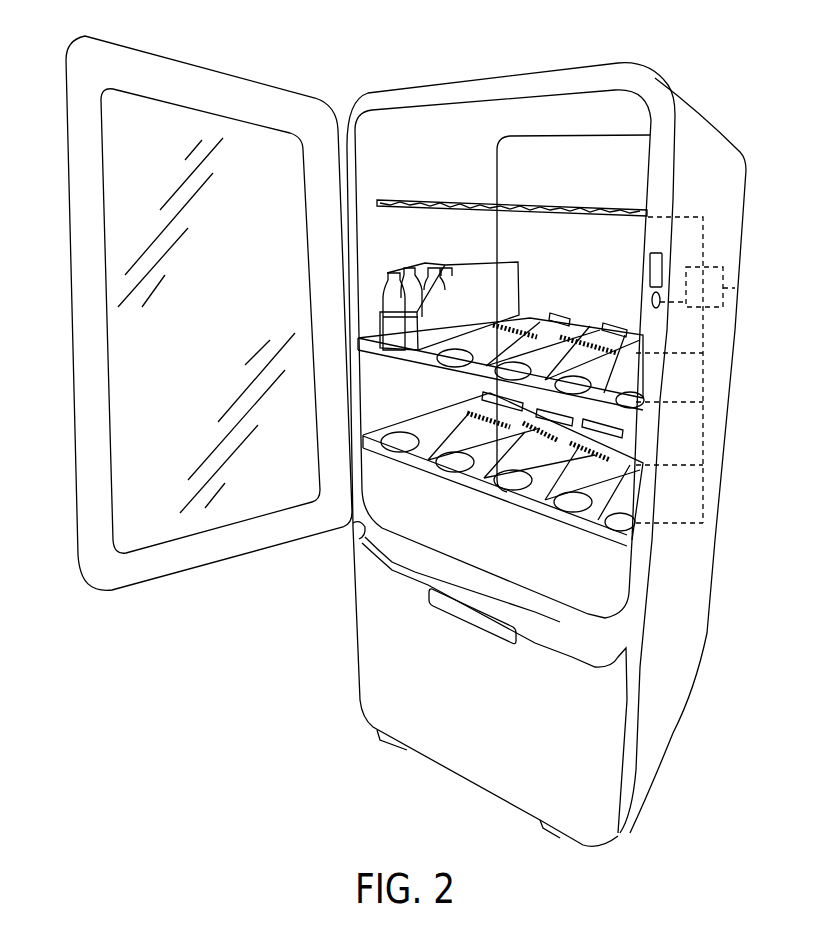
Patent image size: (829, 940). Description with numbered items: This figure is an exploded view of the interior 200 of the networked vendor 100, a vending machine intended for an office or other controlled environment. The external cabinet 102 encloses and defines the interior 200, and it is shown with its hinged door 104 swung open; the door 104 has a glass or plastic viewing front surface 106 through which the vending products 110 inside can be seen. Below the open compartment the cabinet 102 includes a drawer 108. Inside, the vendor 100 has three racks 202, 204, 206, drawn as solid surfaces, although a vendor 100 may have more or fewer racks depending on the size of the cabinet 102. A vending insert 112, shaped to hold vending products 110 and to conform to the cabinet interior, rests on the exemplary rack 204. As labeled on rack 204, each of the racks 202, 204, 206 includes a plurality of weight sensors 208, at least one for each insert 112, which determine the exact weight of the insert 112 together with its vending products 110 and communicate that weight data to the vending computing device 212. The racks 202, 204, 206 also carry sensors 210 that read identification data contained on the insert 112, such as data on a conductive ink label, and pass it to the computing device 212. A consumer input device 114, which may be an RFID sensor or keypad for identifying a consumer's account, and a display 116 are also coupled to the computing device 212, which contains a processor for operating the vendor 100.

The networked vendor 100 is at (697, 98).
The external cabinet 102 is at (690, 613).
The hinged door 104 is at (88, 490).
The viewing front surface 106 is at (145, 372).
The drawer 108 is at (597, 750).
The vending products 110 is at (398, 272).
The vending insert 112 is at (494, 305).
The consumer input device 114 is at (660, 305).
The display 116 is at (658, 253).
The interior area 200 is at (542, 163).
The rack 202 is at (612, 211).
The rack 204 is at (617, 371).
The rack 206 is at (610, 486).
The weight sensors 208 is at (561, 323).
The sensors 210 is at (618, 325).
The vending computing device 212 is at (715, 266).